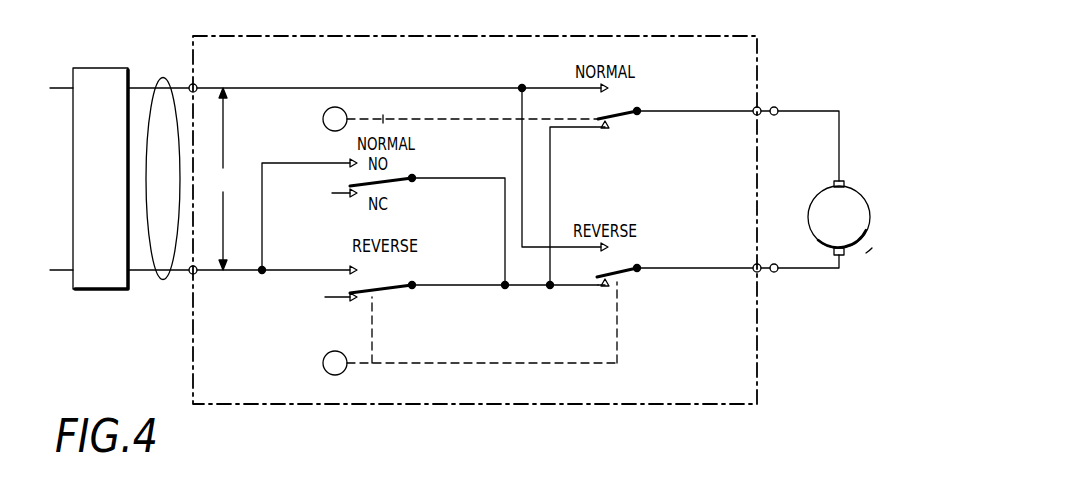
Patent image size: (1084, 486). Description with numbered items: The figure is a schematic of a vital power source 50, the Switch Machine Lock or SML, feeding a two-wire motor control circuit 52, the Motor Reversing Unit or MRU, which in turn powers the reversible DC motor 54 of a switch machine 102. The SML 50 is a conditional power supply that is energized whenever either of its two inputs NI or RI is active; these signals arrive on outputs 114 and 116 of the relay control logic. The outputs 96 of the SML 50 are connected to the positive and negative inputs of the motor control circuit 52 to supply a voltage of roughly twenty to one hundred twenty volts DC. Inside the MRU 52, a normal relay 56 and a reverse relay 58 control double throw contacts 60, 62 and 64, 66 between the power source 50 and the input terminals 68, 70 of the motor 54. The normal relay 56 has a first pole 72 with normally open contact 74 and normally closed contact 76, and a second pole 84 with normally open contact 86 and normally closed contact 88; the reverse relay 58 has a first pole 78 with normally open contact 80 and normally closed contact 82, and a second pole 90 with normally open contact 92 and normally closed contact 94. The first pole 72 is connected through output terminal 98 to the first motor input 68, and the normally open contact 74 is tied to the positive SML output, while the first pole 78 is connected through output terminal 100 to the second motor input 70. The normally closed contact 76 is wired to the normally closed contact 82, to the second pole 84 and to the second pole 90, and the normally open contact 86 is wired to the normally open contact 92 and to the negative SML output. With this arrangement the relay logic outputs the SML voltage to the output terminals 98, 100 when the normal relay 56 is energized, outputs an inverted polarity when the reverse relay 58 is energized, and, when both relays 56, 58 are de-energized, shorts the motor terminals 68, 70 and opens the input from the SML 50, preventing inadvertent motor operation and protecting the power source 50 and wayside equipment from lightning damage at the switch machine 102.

The vital power source 50 is at (100, 290).
The two-wire motor control circuit 52 is at (502, 36).
The reversible switch machine motor 54 is at (864, 194).
The normal relay 56 is at (323, 119).
The reverse relay 58 is at (323, 363).
The double throw contact 60 is at (631, 124).
The double throw contact 62 is at (417, 199).
The double throw contact 64 is at (631, 285).
The double throw contact 66 is at (418, 276).
The first input terminal 68 is at (777, 108).
The second input terminal 70 is at (776, 273).
The first pole 72 is at (638, 110).
The normally open contact 74 is at (600, 92).
The normally closed contact 76 is at (605, 129).
The first pole 78 is at (638, 267).
The normally open contact 80 is at (600, 250).
The normally closed contact 82 is at (605, 288).
The second pole 84 is at (414, 176).
The normally open contact 86 is at (358, 168).
The normally closed contact 88 is at (356, 196).
The second pole 90 is at (414, 288).
The normally open contact 92 is at (358, 272).
The normally closed contact 94 is at (356, 300).
The outputs 96 is at (172, 95).
The output terminal 98 is at (754, 107).
The output terminal 100 is at (754, 265).
The switch machine 102 is at (880, 258).
The output 114 is at (62, 86).
The output 116 is at (62, 268).